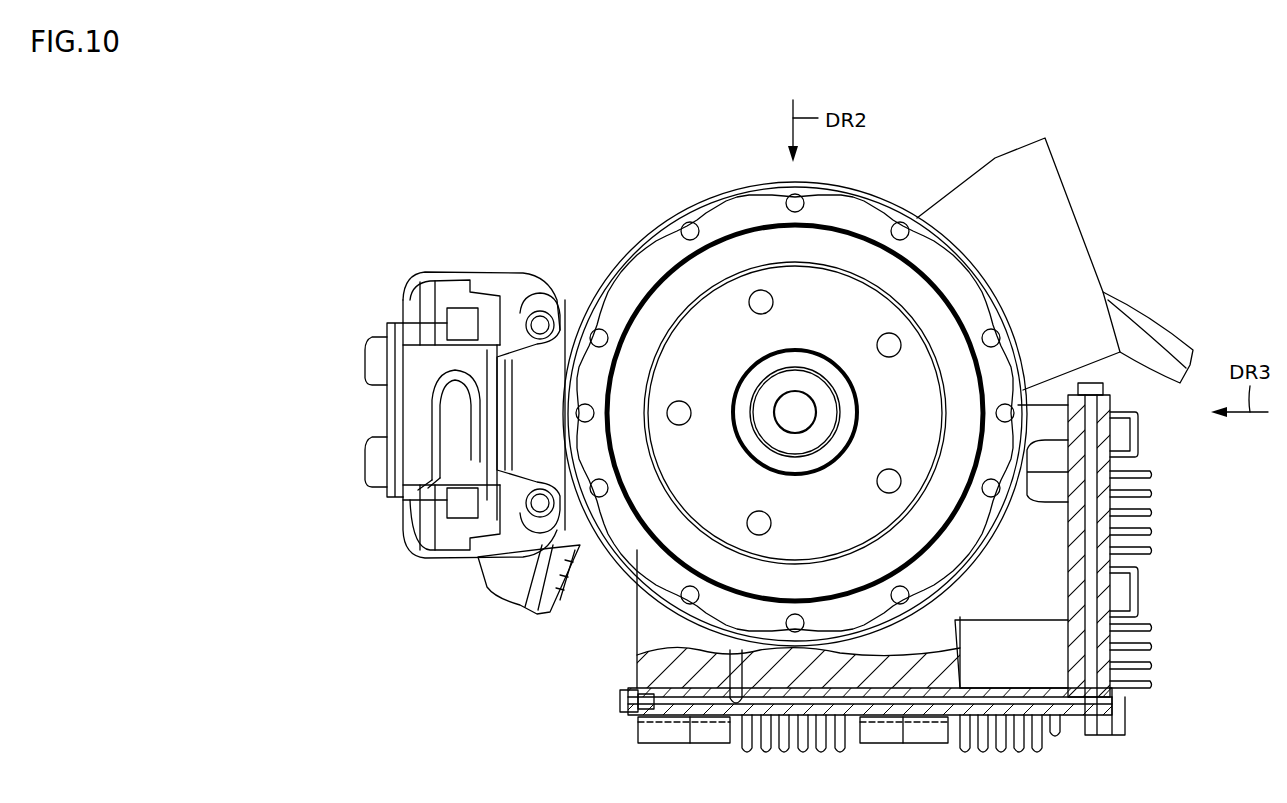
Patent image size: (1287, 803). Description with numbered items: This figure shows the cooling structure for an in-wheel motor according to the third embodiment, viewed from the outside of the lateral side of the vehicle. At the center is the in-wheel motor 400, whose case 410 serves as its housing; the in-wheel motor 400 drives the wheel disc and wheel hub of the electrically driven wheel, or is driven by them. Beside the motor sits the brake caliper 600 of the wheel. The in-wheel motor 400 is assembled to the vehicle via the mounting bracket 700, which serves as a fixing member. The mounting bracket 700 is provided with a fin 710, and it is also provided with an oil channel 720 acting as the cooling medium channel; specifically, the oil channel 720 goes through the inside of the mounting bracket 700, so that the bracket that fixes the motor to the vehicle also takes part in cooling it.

The in-wheel motor 400 is at (877, 192).
The case 410 is at (653, 655).
The brake caliper 600 is at (410, 269).
The mounting bracket 700 is at (1103, 500).
The fin 710 is at (1140, 628).
The oil channel 720 is at (1033, 704).